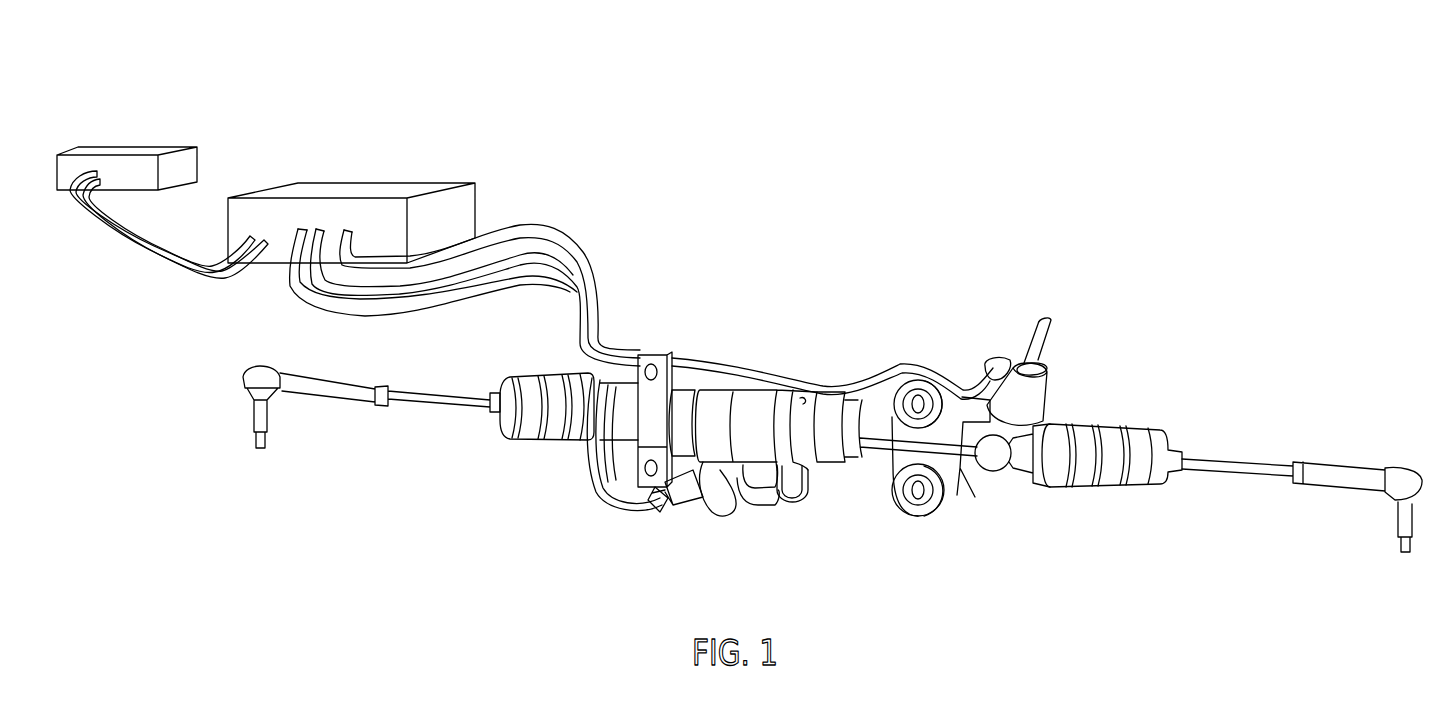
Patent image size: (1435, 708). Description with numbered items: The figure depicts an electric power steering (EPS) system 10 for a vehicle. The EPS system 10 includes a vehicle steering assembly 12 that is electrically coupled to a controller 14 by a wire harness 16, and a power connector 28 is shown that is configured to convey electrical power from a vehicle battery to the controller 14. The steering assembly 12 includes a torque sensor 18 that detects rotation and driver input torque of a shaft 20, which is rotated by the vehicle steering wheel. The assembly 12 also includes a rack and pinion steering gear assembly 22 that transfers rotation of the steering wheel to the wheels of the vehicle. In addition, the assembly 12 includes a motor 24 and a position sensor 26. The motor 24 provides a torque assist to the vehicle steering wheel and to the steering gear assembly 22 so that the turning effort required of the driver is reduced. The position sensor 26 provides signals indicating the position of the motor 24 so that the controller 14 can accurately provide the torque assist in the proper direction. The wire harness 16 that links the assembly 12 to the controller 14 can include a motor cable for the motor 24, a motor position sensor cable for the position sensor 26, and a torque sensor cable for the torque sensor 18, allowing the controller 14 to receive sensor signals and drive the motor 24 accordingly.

The EPS system 10 is at (962, 95).
The vehicle steering assembly 12 is at (783, 292).
The controller 14 is at (373, 190).
The wire harness 16 is at (575, 252).
The torque sensor 18 is at (997, 358).
The shaft 20 is at (1045, 340).
The rack and pinion steering gear assembly 22 is at (935, 512).
The motor 24 is at (637, 512).
The position sensor 26 is at (678, 493).
The power connector 28 is at (148, 155).